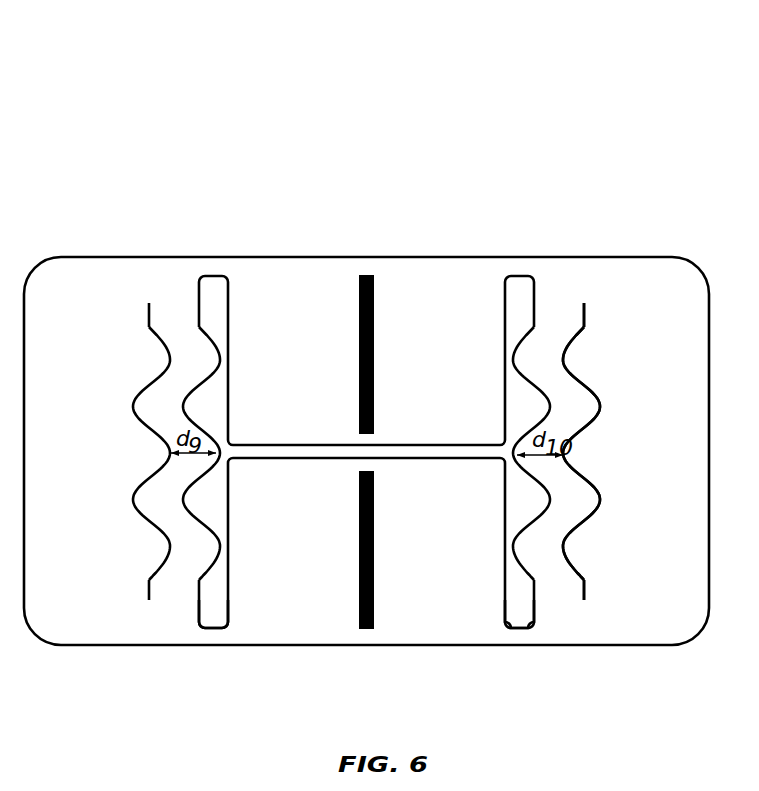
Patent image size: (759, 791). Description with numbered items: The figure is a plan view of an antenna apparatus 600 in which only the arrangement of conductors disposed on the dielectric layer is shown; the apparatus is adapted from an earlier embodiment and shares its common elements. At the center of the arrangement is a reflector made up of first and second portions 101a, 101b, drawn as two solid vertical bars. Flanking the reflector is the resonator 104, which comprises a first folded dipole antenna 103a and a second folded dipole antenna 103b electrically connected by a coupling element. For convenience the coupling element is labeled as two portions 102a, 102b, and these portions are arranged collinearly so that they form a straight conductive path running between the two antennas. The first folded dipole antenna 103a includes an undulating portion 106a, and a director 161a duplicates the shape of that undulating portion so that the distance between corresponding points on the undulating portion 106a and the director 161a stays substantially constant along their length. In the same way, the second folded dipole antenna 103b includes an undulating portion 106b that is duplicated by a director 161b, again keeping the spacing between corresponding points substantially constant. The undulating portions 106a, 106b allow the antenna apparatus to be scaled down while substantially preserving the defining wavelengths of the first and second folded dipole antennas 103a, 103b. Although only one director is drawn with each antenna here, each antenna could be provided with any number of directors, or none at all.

The antenna apparatus 600 is at (665, 98).
The first portion of reflector 101a is at (375, 325).
The second portion of reflector 101b is at (375, 520).
The first portion of coupling element 102a is at (302, 458).
The second portion of coupling element 102b is at (423, 458).
The first folded dipole antenna 103a is at (199, 600).
The second folded dipole antenna 103b is at (535, 600).
The resonator 104 is at (556, 324).
The undulating portion 106a is at (207, 568).
The undulating portion 106b is at (527, 568).
The director 161a is at (158, 567).
The director 161b is at (577, 567).